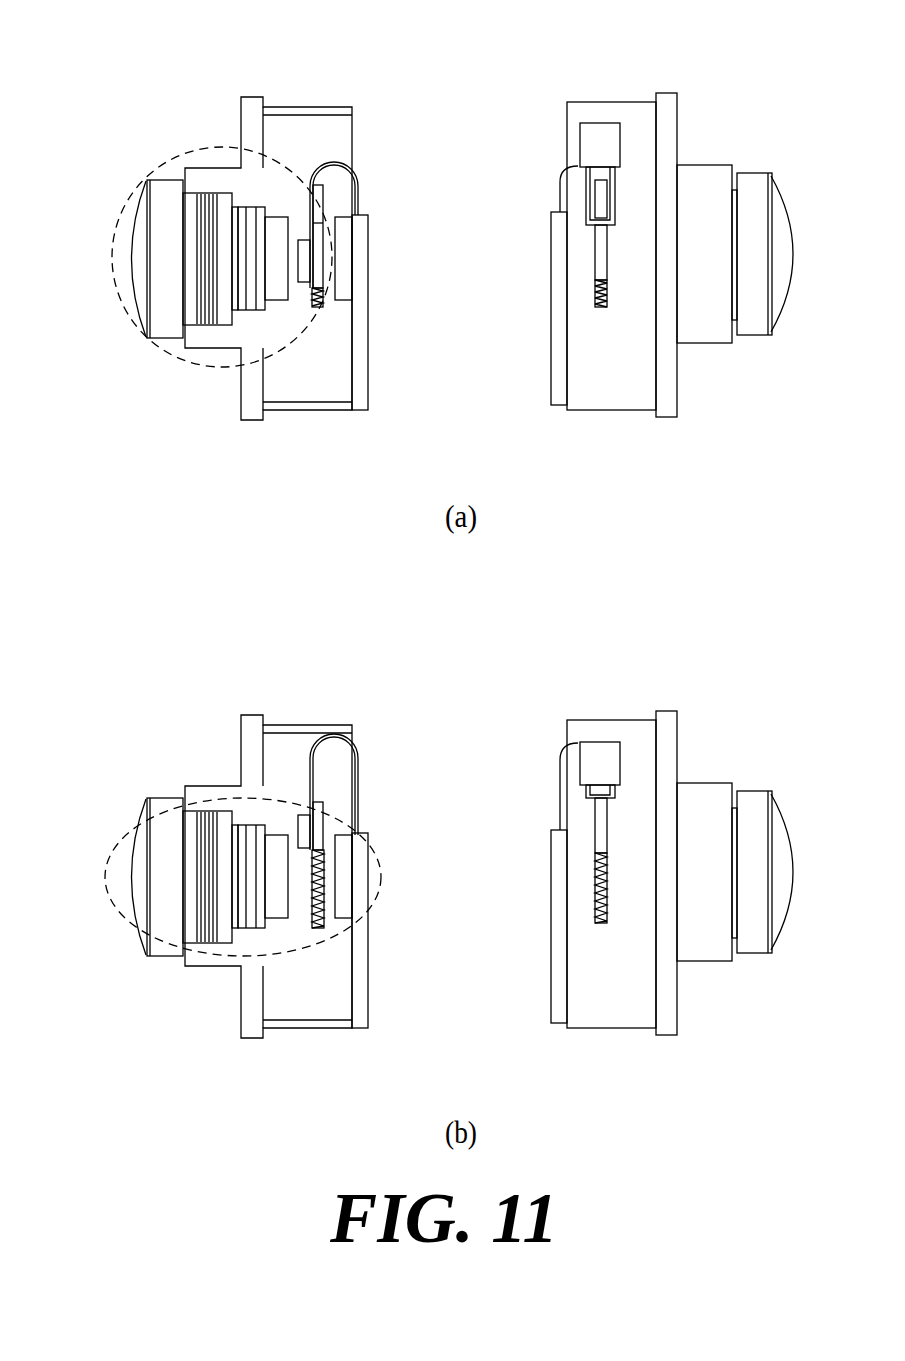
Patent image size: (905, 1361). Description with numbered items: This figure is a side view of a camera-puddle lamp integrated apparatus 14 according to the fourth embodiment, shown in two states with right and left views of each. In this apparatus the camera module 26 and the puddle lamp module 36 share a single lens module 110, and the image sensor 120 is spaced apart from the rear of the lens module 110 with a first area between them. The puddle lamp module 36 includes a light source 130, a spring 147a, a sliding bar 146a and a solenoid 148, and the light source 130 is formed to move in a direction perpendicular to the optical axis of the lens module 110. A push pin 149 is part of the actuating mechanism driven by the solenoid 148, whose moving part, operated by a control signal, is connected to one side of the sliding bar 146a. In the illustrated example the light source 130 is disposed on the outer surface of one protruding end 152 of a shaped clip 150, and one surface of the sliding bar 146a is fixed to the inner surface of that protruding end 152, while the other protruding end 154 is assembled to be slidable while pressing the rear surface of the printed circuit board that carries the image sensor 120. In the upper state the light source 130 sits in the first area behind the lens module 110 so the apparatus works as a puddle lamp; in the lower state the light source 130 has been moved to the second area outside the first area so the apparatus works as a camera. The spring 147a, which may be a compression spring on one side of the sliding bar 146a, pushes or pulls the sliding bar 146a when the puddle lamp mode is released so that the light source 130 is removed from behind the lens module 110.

The camera module 14 is at (96, 40).
The lens module 110 is at (160, 182).
The image sensor 120 is at (345, 257).
The light source 130 is at (307, 270).
The clip 150 is at (392, 56).
The one protruding end 152 is at (313, 182).
The other protruding end 154 is at (367, 175).
The solenoid 148 is at (582, 133).
The push pin 149 is at (597, 188).
The sliding bar 146a is at (598, 255).
The spring 147a is at (598, 295).
The puddle lamp module 36 is at (135, 333).
The camera module 26 is at (128, 922).